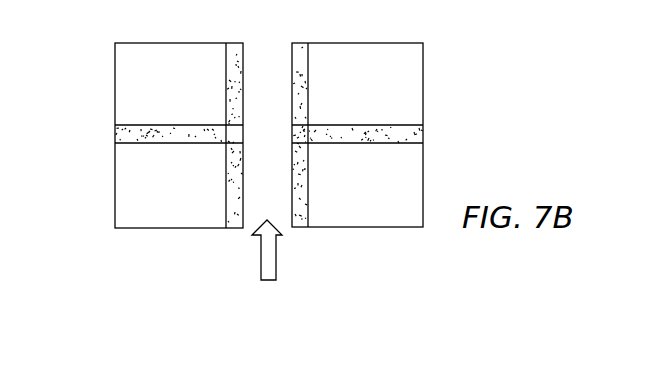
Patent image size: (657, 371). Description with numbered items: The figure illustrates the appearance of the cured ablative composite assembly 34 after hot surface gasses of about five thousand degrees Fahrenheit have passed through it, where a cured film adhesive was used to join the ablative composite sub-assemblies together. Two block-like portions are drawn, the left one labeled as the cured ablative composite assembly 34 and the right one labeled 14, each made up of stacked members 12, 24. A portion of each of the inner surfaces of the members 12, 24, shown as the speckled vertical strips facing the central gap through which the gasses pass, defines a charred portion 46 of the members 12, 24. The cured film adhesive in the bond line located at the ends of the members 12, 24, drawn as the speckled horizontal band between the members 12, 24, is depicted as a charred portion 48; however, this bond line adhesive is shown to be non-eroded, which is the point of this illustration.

The cured ablative composite assembly 34 is at (128, 33).
The second block structure 14 is at (268, 50).
The member 24 is at (178, 92).
The member 12 is at (140, 189).
The charred portion 48 is at (115, 131).
The charred portion 46 is at (292, 186).